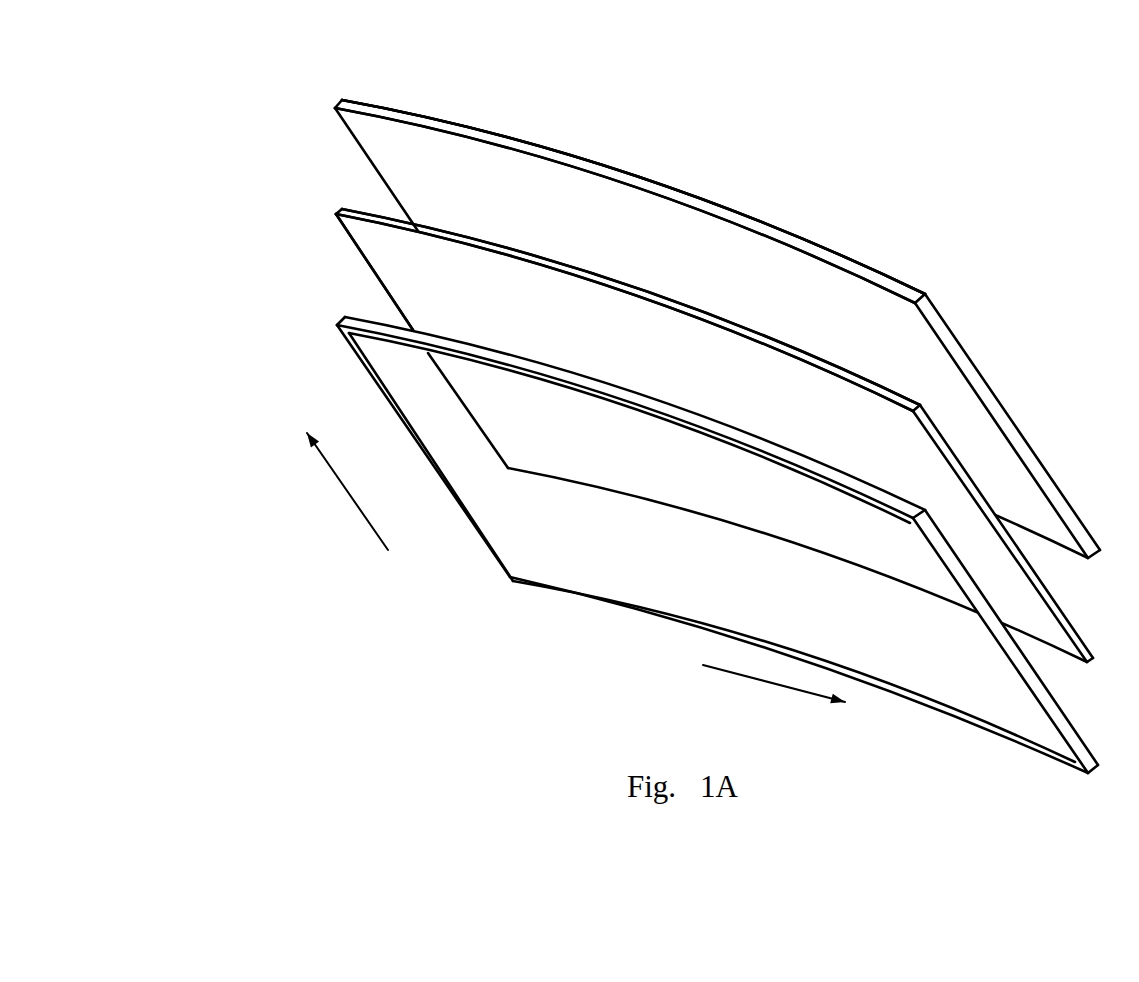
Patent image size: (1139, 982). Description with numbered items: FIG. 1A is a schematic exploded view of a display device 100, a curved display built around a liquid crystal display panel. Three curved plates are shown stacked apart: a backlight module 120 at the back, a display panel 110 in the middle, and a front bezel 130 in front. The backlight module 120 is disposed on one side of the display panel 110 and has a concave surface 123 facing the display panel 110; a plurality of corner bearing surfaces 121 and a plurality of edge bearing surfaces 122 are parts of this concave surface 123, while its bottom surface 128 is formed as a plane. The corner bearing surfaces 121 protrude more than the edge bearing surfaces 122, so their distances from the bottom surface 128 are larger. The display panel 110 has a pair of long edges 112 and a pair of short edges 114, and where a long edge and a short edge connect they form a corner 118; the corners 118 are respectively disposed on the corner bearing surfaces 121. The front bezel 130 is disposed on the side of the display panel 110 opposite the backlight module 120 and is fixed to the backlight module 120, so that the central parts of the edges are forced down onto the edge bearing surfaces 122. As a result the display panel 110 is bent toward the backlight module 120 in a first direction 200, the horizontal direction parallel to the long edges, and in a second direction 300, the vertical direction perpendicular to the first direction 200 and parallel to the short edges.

The display device 100 is at (261, 81).
The display panel 110 is at (248, 208).
The long edges 112 is at (408, 230).
The short edges 114 is at (384, 282).
The corner 118 is at (334, 211).
The backlight module 120 is at (642, 177).
The corner bearing surfaces 121 is at (366, 130).
The edge bearing surfaces 122 is at (420, 207).
The concave surface 123 is at (248, 128).
The bottom surface 128 is at (438, 121).
The front bezel 130 is at (361, 360).
The first direction 200 is at (760, 680).
The second direction 300 is at (351, 497).